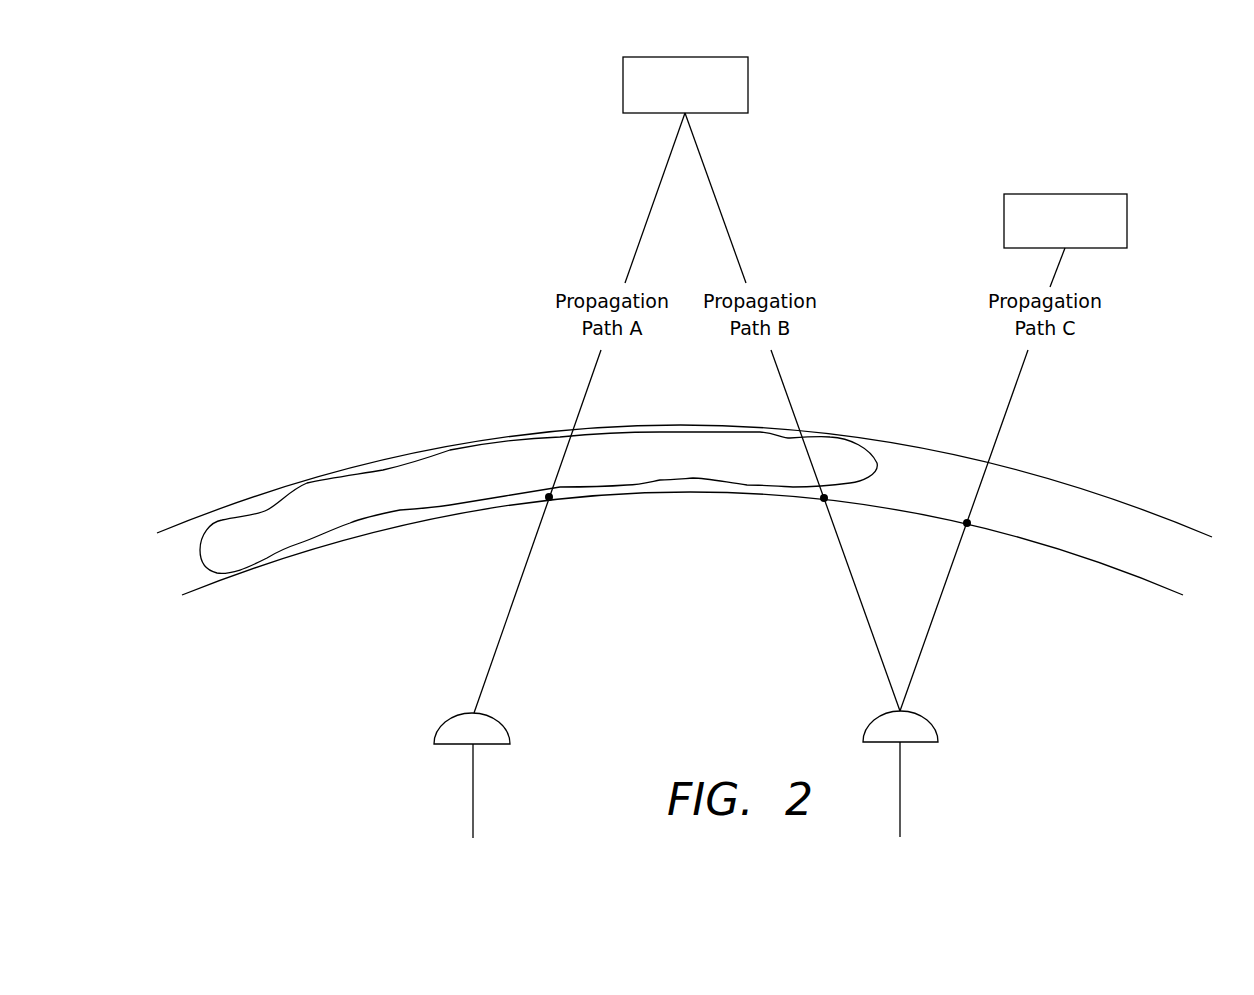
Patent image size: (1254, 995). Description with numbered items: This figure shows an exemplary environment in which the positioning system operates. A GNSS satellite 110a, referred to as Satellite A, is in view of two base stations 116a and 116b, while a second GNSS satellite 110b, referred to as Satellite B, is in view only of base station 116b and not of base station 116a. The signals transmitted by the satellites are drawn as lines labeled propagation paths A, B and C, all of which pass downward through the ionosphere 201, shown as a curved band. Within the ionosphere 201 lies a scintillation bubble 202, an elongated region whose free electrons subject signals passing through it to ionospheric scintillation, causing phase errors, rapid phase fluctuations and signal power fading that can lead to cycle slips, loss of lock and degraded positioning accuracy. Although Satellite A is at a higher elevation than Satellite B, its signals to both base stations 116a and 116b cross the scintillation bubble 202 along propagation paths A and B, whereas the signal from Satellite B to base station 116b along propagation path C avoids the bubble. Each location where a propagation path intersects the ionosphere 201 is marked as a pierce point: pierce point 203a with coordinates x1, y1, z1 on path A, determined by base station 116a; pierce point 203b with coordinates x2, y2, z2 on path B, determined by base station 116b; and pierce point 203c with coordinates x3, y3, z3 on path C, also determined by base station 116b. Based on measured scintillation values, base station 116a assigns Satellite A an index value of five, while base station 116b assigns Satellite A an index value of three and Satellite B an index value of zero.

The GNSS satellite (Satellite A) 110a is at (623, 85).
The GNSS satellite (Satellite B) 110b is at (1004, 222).
The base station 116a is at (445, 725).
The base station 116b is at (928, 720).
The ionosphere 201 is at (1057, 477).
The scintillation bubble 202 is at (268, 508).
The pierce point 203a is at (549, 497).
The pierce point 203b is at (824, 498).
The pierce point 203c is at (967, 523).